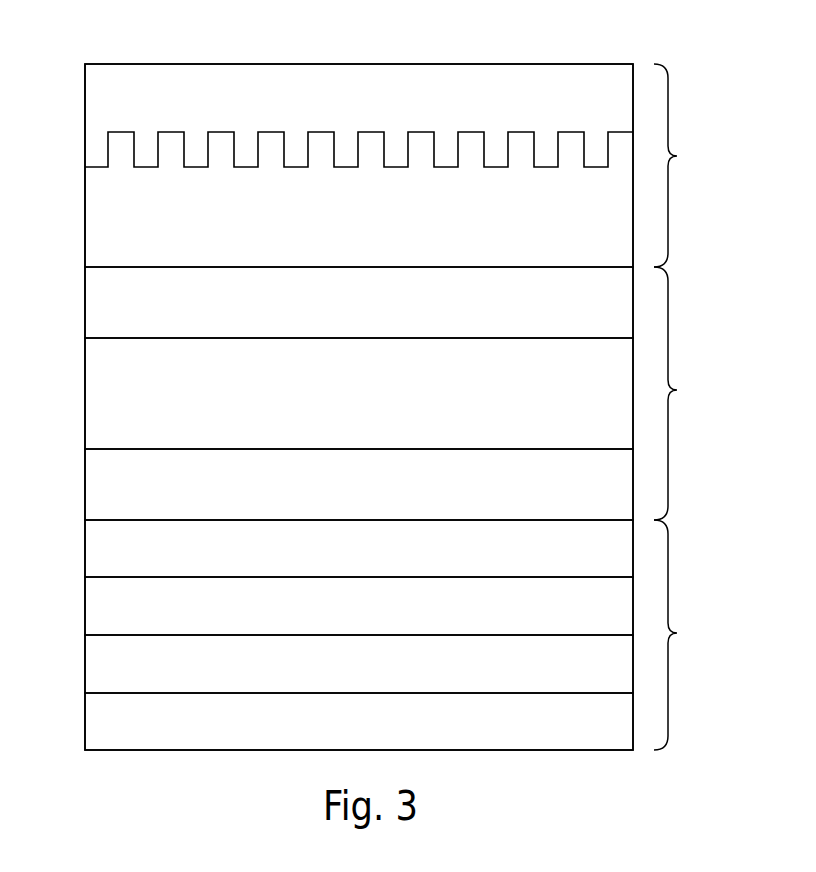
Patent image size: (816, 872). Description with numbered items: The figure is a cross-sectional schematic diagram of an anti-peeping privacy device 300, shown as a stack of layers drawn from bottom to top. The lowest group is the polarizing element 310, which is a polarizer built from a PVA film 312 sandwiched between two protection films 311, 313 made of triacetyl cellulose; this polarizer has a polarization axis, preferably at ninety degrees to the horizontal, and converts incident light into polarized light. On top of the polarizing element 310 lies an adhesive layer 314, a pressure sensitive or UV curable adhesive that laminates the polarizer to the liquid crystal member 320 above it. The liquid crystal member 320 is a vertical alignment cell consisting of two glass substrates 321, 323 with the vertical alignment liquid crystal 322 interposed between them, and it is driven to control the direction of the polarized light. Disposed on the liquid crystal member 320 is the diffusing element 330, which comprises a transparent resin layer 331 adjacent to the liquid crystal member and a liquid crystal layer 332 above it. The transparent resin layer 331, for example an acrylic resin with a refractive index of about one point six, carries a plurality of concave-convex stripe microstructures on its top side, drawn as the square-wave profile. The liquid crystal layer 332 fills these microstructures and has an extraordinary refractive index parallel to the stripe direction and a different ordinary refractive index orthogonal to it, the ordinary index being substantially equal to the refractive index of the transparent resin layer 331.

The anti-peeping privacy device 300 is at (86, 30).
The polarizing element 310 is at (692, 635).
The protection film 311 is at (359, 721).
The PVA film 312 is at (359, 664).
The protection film 313 is at (359, 606).
The adhesive layer 314 is at (359, 548).
The liquid crystal member 320 is at (692, 393).
The glass substrate 321 is at (359, 484).
The vertical alignment liquid crystal 322 is at (359, 393).
The glass substrate 323 is at (359, 302).
The diffusing element 330 is at (692, 165).
The transparent resin layer 331 is at (359, 199).
The liquid crystal layer 332 is at (359, 115).